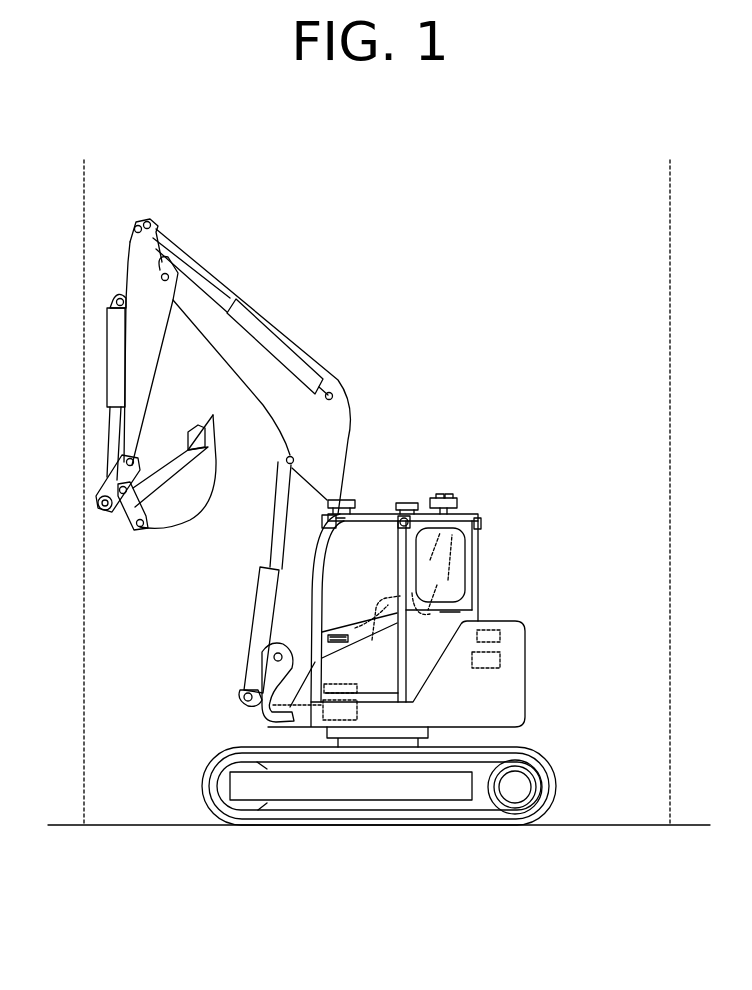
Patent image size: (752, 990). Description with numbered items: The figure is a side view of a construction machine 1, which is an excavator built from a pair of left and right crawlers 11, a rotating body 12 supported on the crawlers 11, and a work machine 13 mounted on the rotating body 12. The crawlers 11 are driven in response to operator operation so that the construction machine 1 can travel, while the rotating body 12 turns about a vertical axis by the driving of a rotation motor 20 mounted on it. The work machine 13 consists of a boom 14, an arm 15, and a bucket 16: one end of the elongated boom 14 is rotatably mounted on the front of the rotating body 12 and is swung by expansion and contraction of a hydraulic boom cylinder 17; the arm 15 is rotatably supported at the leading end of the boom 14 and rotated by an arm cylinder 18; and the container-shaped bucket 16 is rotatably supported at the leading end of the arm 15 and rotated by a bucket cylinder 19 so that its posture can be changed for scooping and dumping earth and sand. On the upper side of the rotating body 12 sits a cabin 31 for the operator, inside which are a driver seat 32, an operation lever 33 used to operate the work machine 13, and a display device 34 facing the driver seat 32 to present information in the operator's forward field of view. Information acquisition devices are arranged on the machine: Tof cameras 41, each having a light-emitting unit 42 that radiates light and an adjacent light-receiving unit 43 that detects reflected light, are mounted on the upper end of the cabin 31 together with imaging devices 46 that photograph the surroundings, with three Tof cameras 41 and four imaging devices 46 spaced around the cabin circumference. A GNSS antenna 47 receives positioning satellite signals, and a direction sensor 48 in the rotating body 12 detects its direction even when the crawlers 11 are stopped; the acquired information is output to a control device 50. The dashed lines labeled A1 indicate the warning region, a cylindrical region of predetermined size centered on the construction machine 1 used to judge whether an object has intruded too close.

The construction machine 1 is at (588, 228).
The crawlers 11 is at (378, 828).
The rotating body 12 is at (272, 728).
The work machine 13 is at (205, 214).
The boom 14 is at (337, 429).
The arm 15 is at (148, 368).
The bucket 16 is at (182, 513).
The boom cylinder 17 is at (258, 588).
The arm cylinder 18 is at (287, 346).
The bucket cylinder 19 is at (108, 382).
The rotation motor 20 is at (242, 693).
The cabin 31 is at (479, 494).
The driver seat 32 is at (473, 594).
The operation lever 33 is at (445, 568).
The display device 34 is at (262, 651).
The Tof camera 41 is at (287, 461).
The light-emitting unit 42 is at (434, 496).
The light-receiving unit 43 is at (452, 496).
The imaging device 46 is at (320, 522).
The GNSS antenna 47 is at (406, 512).
The direction sensor 48 is at (500, 637).
The control device 50 is at (500, 662).
The warning region A1 is at (84, 197).